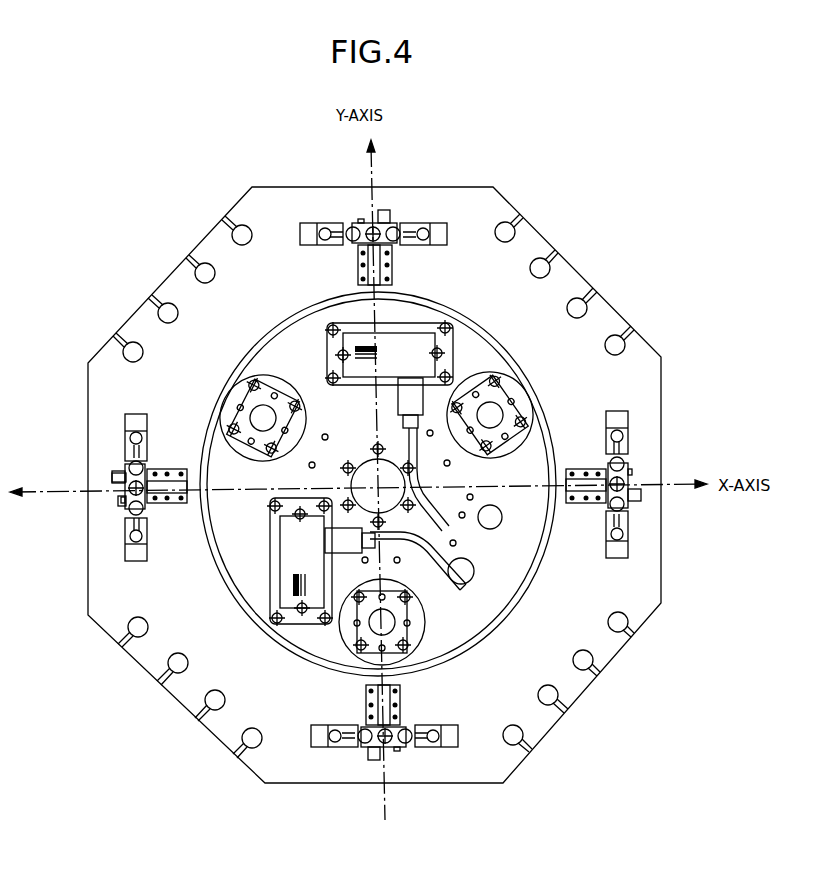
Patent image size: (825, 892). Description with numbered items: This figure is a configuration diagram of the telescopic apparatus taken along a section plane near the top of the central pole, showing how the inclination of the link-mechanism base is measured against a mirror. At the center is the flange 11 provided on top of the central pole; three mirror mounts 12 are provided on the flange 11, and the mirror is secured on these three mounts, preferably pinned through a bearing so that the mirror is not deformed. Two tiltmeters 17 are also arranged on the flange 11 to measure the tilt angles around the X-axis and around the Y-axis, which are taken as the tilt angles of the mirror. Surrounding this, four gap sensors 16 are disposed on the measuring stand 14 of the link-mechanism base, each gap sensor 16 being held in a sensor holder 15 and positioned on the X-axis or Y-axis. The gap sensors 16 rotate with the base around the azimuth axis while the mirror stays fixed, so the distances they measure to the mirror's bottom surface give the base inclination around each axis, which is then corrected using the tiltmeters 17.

The flange 11 is at (550, 412).
The mirror mount 12 is at (500, 380).
The measuring stand 14 is at (615, 663).
The sensor holder 15 is at (125, 512).
The gap sensor 16 is at (397, 220).
The tiltmeter 17 is at (413, 327).